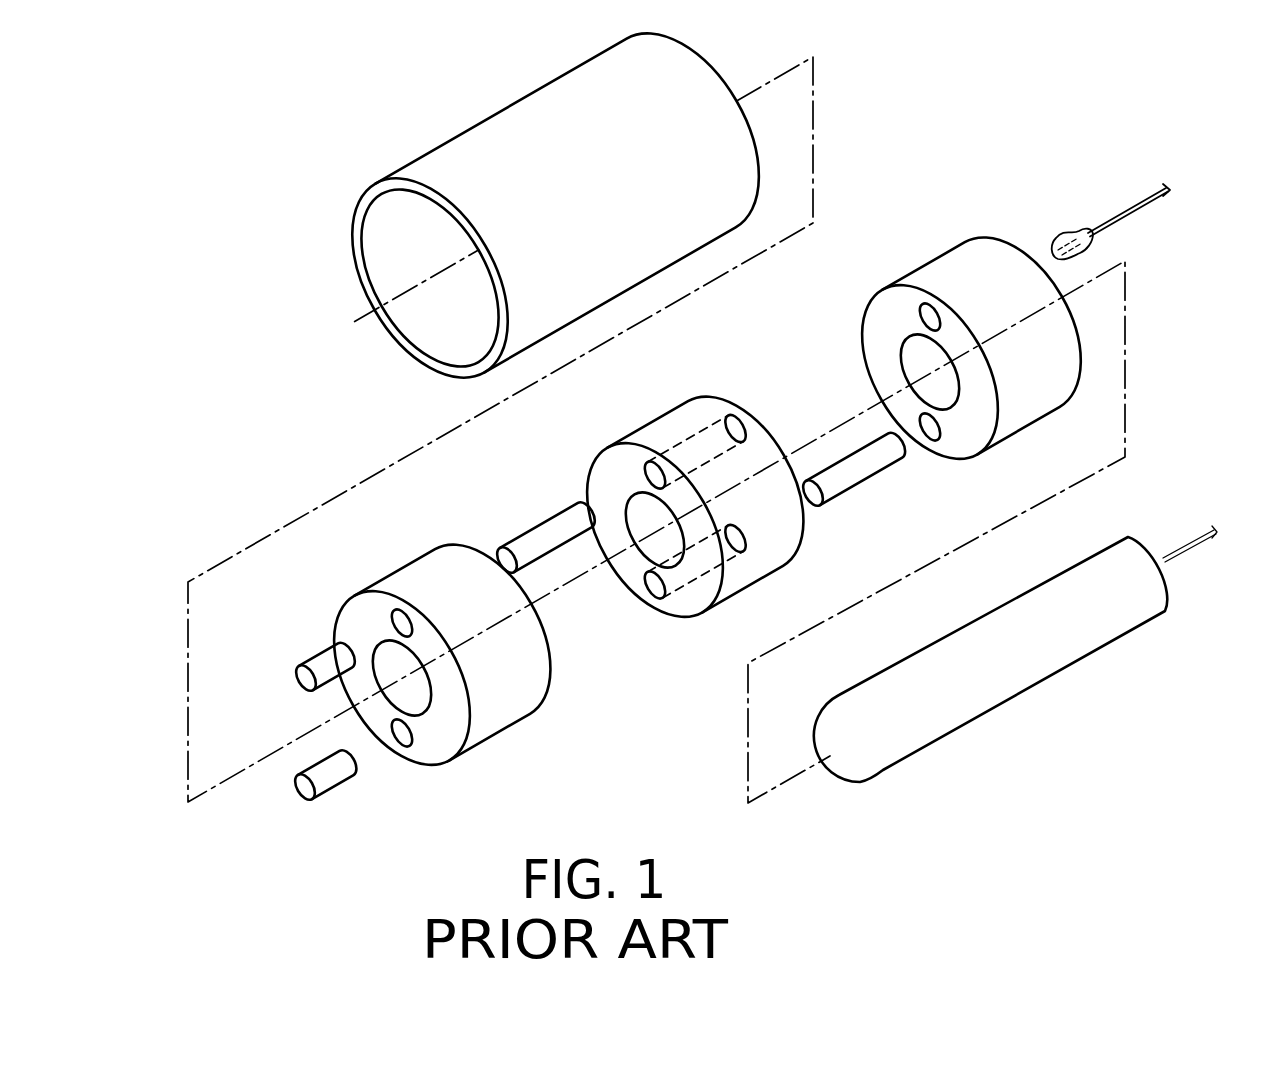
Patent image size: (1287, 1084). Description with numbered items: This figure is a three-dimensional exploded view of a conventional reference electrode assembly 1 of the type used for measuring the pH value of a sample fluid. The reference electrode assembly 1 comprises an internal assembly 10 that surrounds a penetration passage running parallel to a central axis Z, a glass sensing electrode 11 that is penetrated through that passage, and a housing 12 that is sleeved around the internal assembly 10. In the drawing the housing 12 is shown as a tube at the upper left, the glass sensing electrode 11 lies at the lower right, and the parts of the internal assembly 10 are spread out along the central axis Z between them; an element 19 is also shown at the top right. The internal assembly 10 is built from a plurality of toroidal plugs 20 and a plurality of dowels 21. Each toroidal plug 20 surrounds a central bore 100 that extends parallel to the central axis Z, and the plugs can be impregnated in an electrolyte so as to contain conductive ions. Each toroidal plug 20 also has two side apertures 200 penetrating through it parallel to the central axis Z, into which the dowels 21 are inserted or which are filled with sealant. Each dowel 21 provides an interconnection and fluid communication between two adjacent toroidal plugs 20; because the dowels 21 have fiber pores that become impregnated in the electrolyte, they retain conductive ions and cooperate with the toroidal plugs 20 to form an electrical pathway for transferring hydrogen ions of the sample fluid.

The reference electrode assembly 1 is at (205, 202).
The internal assembly 10 is at (976, 168).
The glass sensing electrode 11 is at (1063, 652).
The housing 12 is at (453, 152).
The lead wire / connector 19 is at (1068, 233).
The toroidal plug 20 is at (407, 580).
The dowel 21 is at (315, 660).
The central bore 100 is at (920, 364).
The side aperture 200 is at (395, 621).
The central axis Z is at (352, 312).